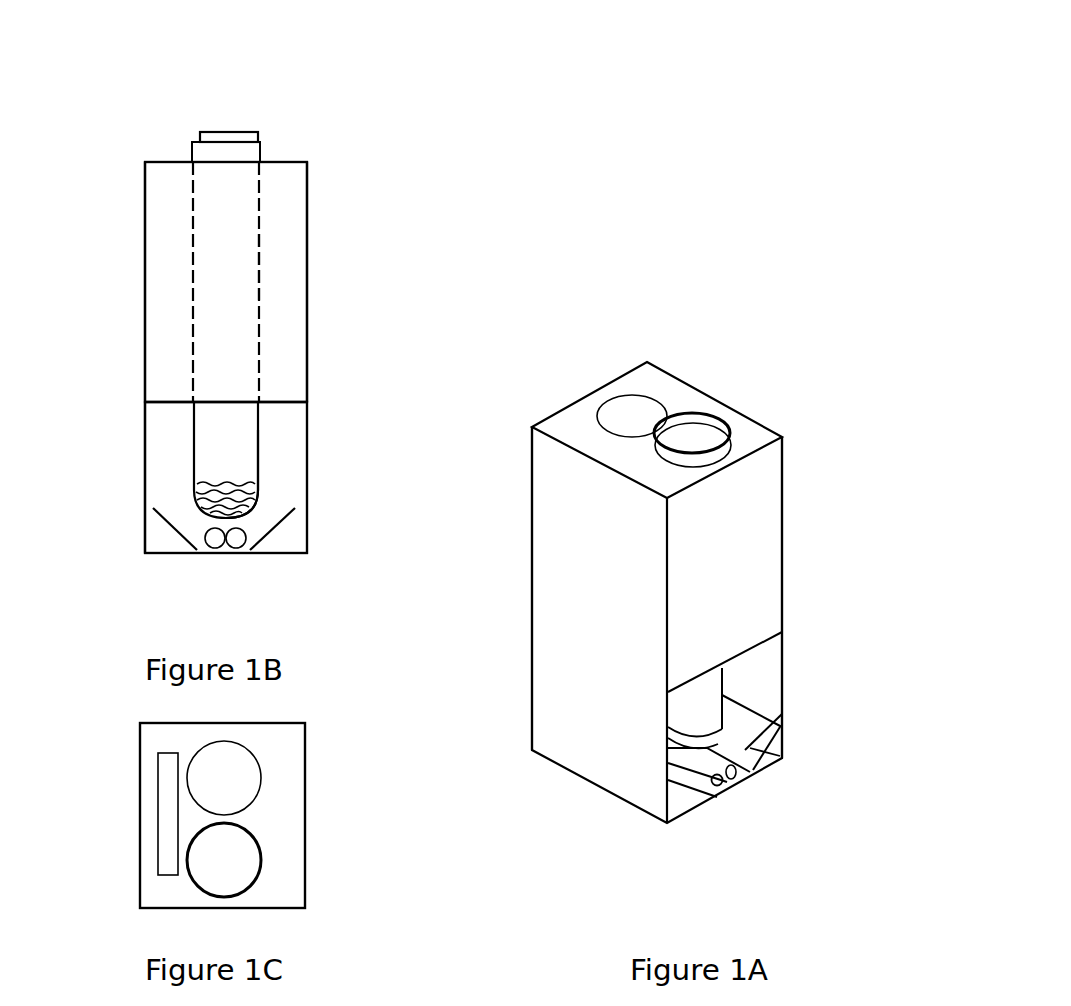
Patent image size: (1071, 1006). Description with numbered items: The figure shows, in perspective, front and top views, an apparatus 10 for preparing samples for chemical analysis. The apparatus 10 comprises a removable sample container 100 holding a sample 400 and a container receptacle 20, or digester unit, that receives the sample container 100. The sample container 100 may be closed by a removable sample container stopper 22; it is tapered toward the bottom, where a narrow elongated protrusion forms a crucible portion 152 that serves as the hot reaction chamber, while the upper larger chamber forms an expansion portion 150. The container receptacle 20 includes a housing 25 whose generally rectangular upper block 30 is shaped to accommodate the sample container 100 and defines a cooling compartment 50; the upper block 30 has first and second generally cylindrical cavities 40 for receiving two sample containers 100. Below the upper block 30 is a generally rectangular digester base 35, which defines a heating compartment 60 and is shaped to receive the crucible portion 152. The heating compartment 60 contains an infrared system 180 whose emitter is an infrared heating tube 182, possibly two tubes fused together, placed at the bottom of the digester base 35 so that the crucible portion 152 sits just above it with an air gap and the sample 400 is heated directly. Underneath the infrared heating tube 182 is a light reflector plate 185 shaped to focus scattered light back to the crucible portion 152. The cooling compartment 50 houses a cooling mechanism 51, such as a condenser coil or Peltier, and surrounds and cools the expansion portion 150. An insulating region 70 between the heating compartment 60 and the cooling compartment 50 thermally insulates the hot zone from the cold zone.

In FIG. 1B, the apparatus 10 is at (198, 42).
In FIG. 1C, the apparatus 10 is at (128, 745).
In FIG. 1A, the apparatus 10 is at (653, 270).
In FIG. 1B, the container receptacle 20 is at (305, 190).
In FIG. 1A, the container receptacle 20 is at (747, 412).
In FIG. 1B, the sample container stopper 22 is at (228, 132).
In FIG. 1B, the housing 25 is at (310, 222).
In FIG. 1A, the housing 25 is at (788, 465).
In FIG. 1B, the upper block 30 is at (145, 197).
In FIG. 1A, the upper block 30 is at (783, 592).
In FIG. 1B, the digester base 35 is at (145, 430).
In FIG. 1A, the digester base 35 is at (785, 697).
In FIG. 1B, the cavity 40 is at (237, 160).
In FIG. 1C, the cavity 40 is at (228, 782).
In FIG. 1A, the cavity 40 is at (621, 416).
In FIG. 1B, the cooling compartment 50 is at (160, 250).
In FIG. 1A, the cooling compartment 50 is at (740, 572).
In FIG. 1C, the cooling mechanism 51 is at (158, 838).
In FIG. 1B, the heating compartment 60 is at (163, 475).
In FIG. 1A, the heating compartment 60 is at (760, 685).
In FIG. 1B, the insulating region 70 is at (305, 356).
In FIG. 1B, the sample container 100 is at (192, 160).
In FIG. 1C, the sample container 100 is at (265, 860).
In FIG. 1A, the sample container 100 is at (700, 408).
In FIG. 1B, the expansion portion 150 is at (290, 264).
In FIG. 1B, the crucible portion 152 is at (260, 445).
In FIG. 1B, the infrared system 180 is at (190, 550).
In FIG. 1A, the infrared system 180 is at (722, 797).
In FIG. 1B, the infrared heating tube 182 is at (225, 555).
In FIG. 1A, the infrared heating tube 182 is at (753, 783).
In FIG. 1B, the light reflector plate 185 is at (172, 530).
In FIG. 1A, the light reflector plate 185 is at (787, 717).
In FIG. 1B, the sample 400 is at (258, 490).